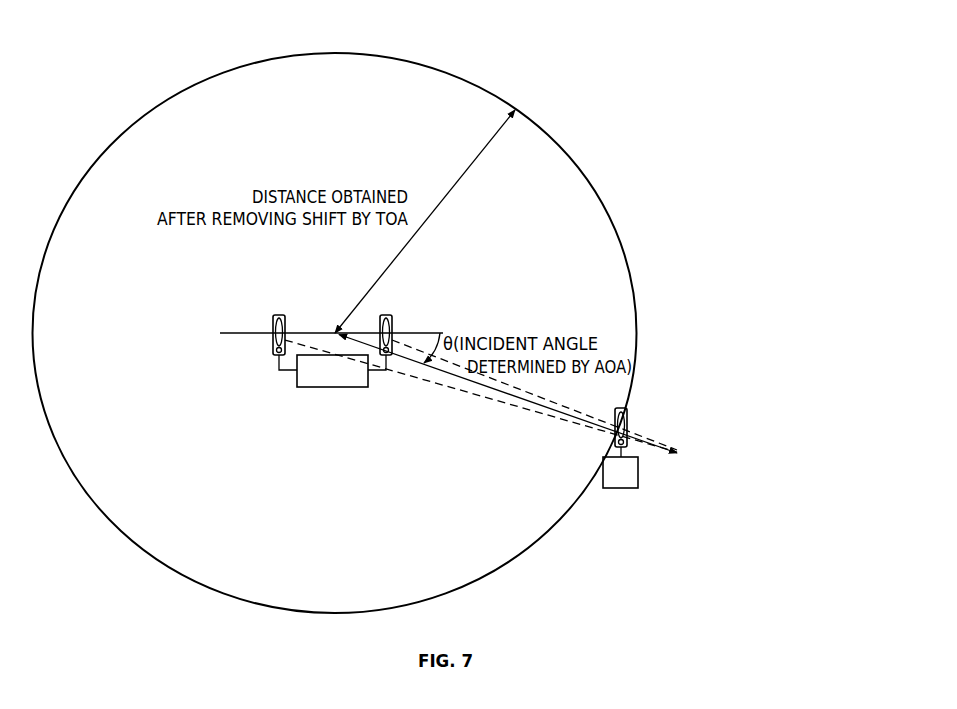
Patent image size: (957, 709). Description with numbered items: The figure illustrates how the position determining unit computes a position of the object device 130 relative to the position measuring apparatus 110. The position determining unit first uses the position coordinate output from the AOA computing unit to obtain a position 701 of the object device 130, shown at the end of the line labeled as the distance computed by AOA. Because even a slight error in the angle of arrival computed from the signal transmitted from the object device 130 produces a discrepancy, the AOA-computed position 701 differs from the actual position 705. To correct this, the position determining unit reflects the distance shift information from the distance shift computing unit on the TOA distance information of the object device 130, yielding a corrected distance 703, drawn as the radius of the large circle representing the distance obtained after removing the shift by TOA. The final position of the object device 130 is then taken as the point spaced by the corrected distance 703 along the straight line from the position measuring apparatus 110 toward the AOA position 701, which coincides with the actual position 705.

The position measuring apparatus 110 is at (313, 387).
The object device for position measurement 130 is at (622, 488).
The position computed using AOA 701 is at (678, 452).
The corrected distance 703 is at (583, 170).
The actual position 705 is at (627, 414).